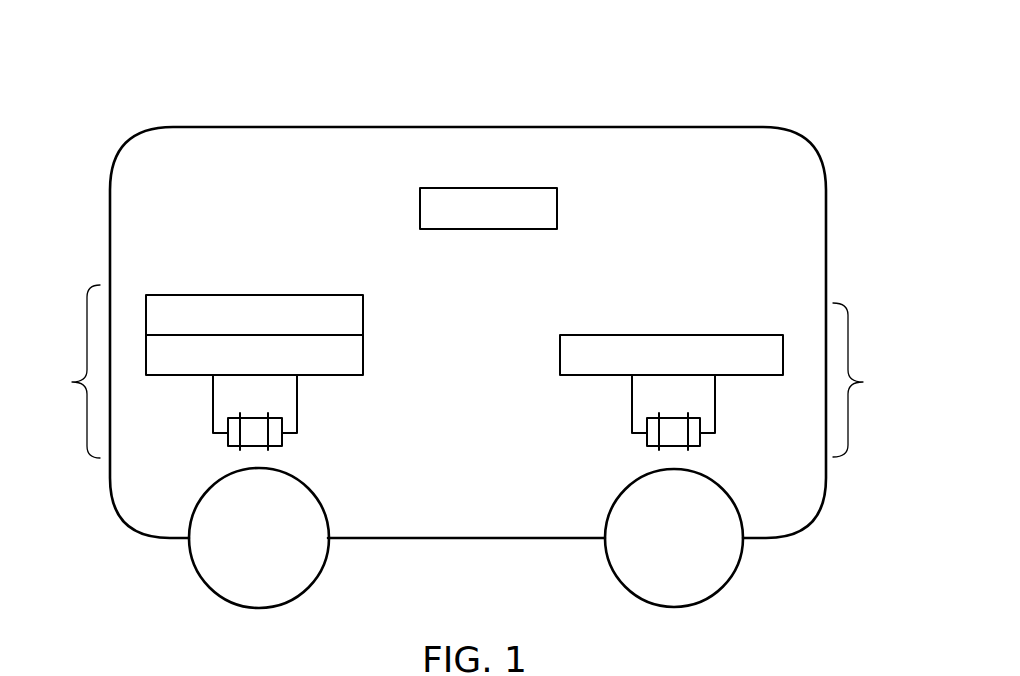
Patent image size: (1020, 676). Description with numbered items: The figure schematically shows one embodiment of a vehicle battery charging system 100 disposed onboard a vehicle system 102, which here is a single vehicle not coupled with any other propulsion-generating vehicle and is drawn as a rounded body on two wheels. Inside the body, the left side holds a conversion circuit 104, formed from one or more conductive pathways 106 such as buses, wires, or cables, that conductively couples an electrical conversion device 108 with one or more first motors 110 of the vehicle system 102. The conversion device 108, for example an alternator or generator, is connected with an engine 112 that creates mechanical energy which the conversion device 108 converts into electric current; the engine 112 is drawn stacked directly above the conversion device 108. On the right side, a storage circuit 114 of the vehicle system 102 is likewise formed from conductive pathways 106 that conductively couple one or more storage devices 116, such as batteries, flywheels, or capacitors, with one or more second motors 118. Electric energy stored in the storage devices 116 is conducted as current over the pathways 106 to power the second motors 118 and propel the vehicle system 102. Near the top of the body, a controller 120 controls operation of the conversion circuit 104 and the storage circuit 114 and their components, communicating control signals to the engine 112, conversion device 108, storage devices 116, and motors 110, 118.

The vehicle battery charging system 100 is at (755, 50).
The vehicle system 102 is at (827, 220).
The conversion circuit 104 is at (62, 371).
The conductive pathways 106 is at (317, 428).
The electrical conversion device 108 is at (364, 352).
The first motors 110 is at (283, 442).
The engine 112 is at (364, 314).
The storage circuit 114 is at (871, 380).
The storage devices 116 is at (670, 334).
The second motors 118 is at (701, 440).
The controller 120 is at (558, 208).